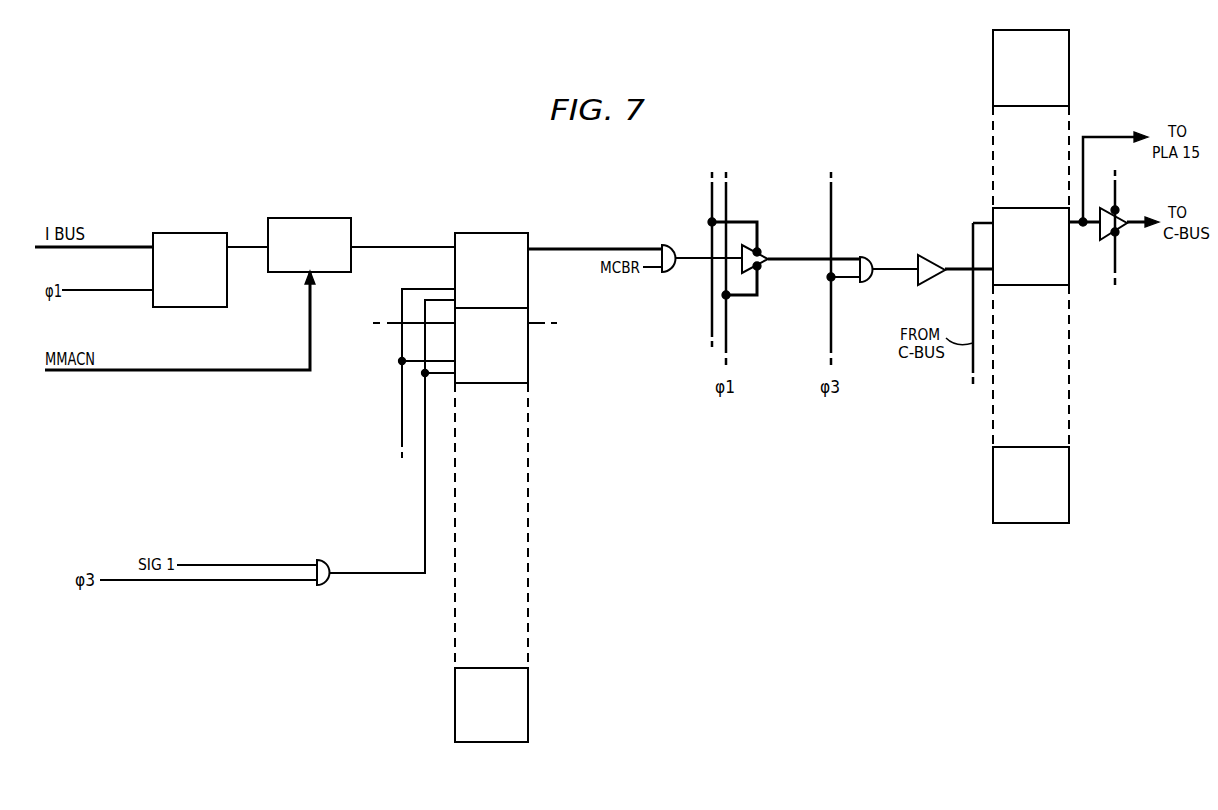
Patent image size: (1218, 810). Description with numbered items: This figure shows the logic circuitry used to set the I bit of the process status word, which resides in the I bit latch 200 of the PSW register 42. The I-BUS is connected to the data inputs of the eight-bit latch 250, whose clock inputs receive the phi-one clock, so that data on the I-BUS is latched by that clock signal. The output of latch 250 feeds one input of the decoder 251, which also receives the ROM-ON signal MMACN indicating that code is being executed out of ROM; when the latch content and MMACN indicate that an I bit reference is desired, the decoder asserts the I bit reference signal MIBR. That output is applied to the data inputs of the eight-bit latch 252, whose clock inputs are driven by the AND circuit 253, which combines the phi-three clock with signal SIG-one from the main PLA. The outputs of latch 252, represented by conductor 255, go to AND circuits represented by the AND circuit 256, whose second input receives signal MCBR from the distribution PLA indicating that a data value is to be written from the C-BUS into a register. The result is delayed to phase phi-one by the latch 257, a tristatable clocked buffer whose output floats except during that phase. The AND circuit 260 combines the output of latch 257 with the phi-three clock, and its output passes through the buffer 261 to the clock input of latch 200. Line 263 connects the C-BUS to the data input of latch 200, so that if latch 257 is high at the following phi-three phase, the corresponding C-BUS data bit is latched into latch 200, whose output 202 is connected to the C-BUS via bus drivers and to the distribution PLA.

The 8-bit latch 250 is at (183, 233).
The decoder 251 is at (300, 218).
The 8-bit latch 252 is at (478, 233).
The AND circuit 253 is at (330, 560).
The conductor 255 is at (547, 248).
The AND circuit 256 is at (668, 245).
The latch 257 is at (762, 250).
The AND circuit 260 is at (866, 257).
The buffer 261 is at (922, 255).
The line 263 is at (973, 305).
The latch 200 is at (1032, 208).
The output 202 is at (1075, 226).
The PSW register 42 is at (993, 65).